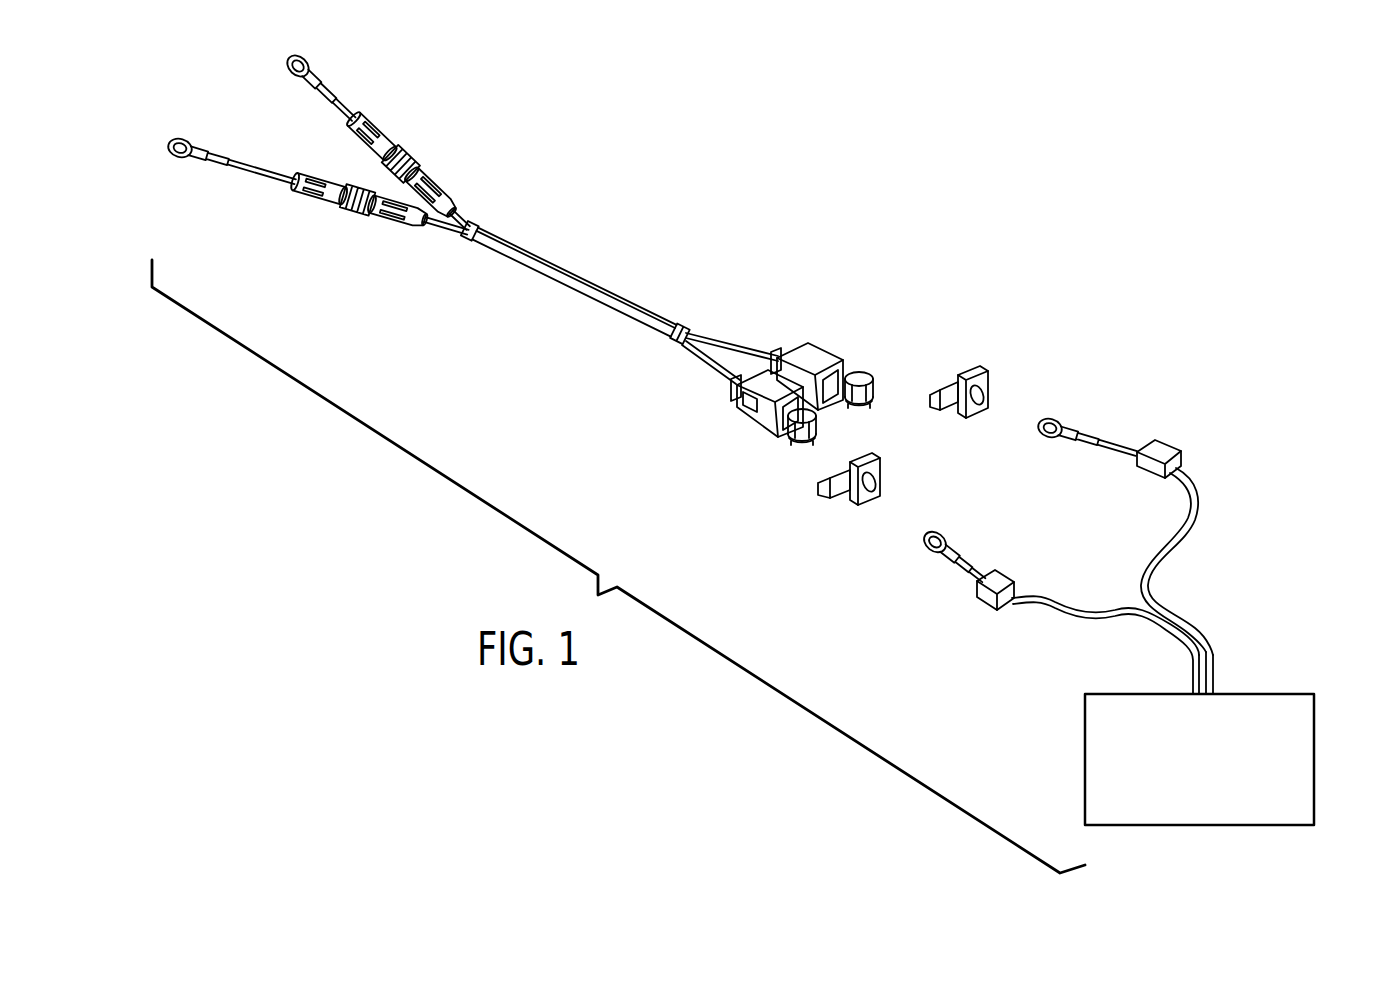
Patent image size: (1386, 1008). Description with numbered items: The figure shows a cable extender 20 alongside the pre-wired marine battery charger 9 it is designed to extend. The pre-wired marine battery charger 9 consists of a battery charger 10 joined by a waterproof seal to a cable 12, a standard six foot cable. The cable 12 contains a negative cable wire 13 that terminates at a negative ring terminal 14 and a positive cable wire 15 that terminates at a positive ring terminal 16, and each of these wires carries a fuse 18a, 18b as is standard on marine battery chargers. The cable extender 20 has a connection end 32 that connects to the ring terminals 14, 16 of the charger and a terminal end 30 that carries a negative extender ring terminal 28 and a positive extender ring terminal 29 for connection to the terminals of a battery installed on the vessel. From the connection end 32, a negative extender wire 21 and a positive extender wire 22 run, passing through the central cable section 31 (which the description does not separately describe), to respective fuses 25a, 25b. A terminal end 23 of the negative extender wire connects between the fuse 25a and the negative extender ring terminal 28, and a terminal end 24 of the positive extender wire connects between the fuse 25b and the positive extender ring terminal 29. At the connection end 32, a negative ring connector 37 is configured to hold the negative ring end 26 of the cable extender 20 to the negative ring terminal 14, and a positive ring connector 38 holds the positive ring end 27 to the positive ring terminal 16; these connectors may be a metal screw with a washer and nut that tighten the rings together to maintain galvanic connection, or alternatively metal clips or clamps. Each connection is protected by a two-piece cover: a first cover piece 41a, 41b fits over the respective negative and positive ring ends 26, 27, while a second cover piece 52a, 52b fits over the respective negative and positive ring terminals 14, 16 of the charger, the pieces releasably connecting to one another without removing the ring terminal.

The pre-wired marine battery charger 9 is at (1318, 503).
The battery charger 10 is at (1083, 760).
The cable 12 is at (1204, 622).
The negative cable wire 13 is at (1080, 617).
The negative ring terminal 14 is at (923, 548).
The positive cable wire 15 is at (1191, 480).
The positive ring terminal 16 is at (1053, 418).
The fuse 18a is at (988, 604).
The fuse 18b is at (1158, 447).
The cable extender 20 is at (815, 156).
The negative extender wire 21 is at (717, 360).
The positive extender wire 22 is at (732, 347).
The terminal end of the negative extender wire 23 is at (272, 178).
The terminal end of the positive extender wire 24 is at (340, 106).
The fuse 25a is at (348, 213).
The fuse 25b is at (399, 150).
The negative ring end 26 is at (817, 421).
The positive ring end 27 is at (867, 402).
The negative extender ring terminal 28 is at (181, 158).
The positive extender ring terminal 29 is at (291, 78).
The terminal end 30 is at (136, 107).
The sheathed cable 31 is at (584, 278).
The connection end 32 is at (978, 265).
The negative ring connector 37 is at (791, 425).
The positive ring connector 38 is at (868, 377).
The first cover piece 41a is at (757, 383).
The first cover piece 41b is at (820, 350).
The second cover piece 52a is at (840, 463).
The second cover piece 52b is at (958, 378).